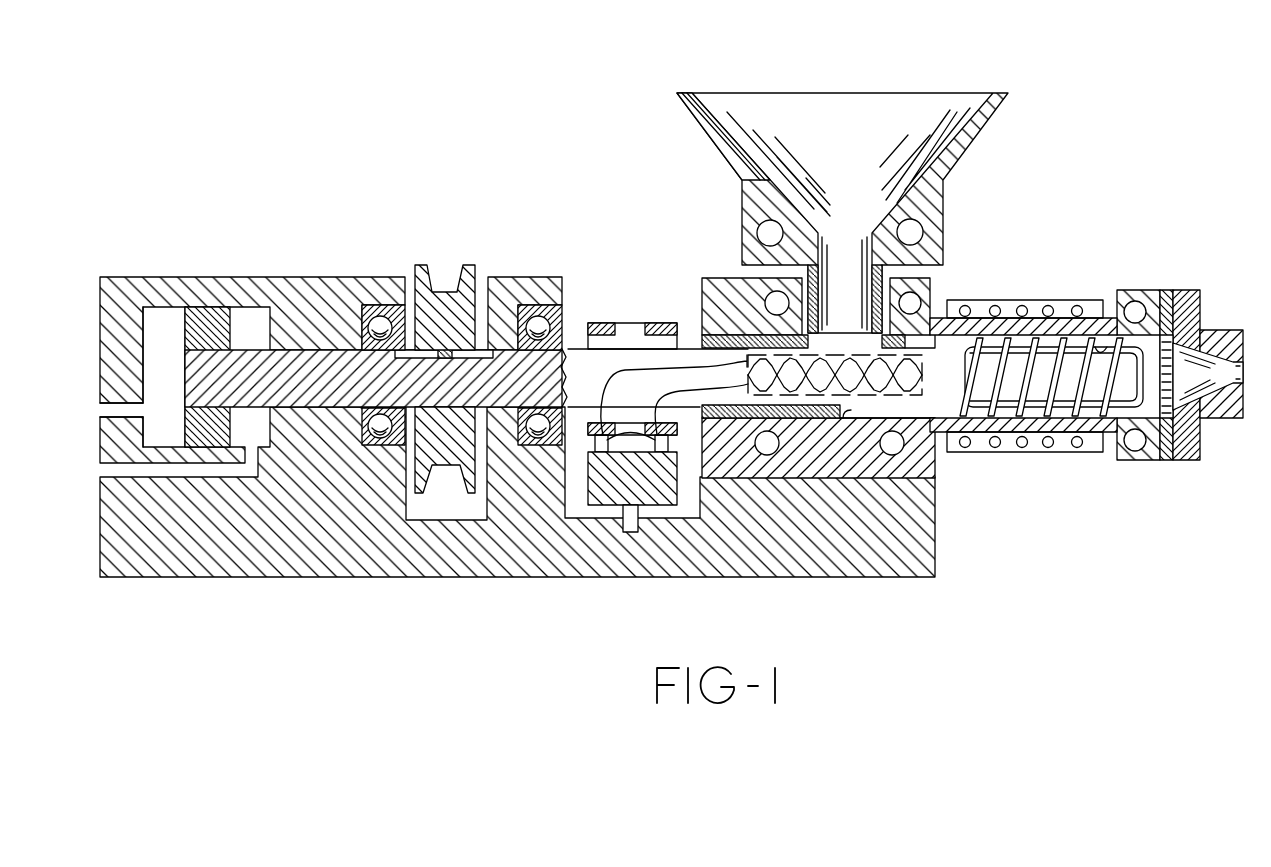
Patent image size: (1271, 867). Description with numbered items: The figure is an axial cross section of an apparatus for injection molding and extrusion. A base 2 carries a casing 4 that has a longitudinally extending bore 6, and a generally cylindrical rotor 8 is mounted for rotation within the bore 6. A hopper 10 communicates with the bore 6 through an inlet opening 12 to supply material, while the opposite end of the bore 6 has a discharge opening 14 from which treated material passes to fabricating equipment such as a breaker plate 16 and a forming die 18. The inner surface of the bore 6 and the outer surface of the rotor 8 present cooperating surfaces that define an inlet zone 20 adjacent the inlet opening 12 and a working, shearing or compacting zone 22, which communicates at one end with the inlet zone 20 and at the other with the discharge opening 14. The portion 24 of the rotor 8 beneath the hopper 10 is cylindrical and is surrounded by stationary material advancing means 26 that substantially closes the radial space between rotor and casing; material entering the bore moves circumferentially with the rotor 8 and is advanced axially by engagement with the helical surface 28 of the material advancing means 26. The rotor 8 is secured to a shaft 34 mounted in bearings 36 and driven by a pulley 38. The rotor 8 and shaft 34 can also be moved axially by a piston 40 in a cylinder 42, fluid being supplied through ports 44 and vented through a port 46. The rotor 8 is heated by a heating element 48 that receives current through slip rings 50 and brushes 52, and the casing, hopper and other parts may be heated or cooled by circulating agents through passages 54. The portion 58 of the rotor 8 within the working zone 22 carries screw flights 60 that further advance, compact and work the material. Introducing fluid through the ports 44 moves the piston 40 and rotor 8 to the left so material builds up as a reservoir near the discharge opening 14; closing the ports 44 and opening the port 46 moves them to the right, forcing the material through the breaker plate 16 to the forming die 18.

The base 2 is at (255, 572).
The casing 4 is at (702, 298).
The bore 6 is at (938, 412).
The rotor 8 is at (1068, 396).
The hopper 10 is at (988, 100).
The inlet opening 12 is at (830, 355).
The discharge opening 14 is at (1054, 377).
The breaker plate 16 is at (1180, 298).
The forming die 18 is at (1222, 340).
The inlet zone 20 is at (868, 405).
The working zone 22 is at (1047, 337).
The portion of the rotor 24 is at (907, 405).
The material advancing means 26 is at (947, 322).
The helical surface 28 is at (843, 418).
The shaft 34 is at (540, 378).
The bearings 36 is at (383, 316).
The pulley 38 is at (447, 292).
The piston 40 is at (218, 315).
The cylinder 42 is at (163, 372).
The ports 44 is at (100, 463).
The port 46 is at (100, 397).
The heating element 48 is at (922, 378).
The slip rings 50 is at (652, 323).
The brushes 52 is at (657, 423).
The passages 54 is at (760, 298).
The portion of the rotor 58 is at (1087, 412).
The screw flights 60 is at (1100, 347).